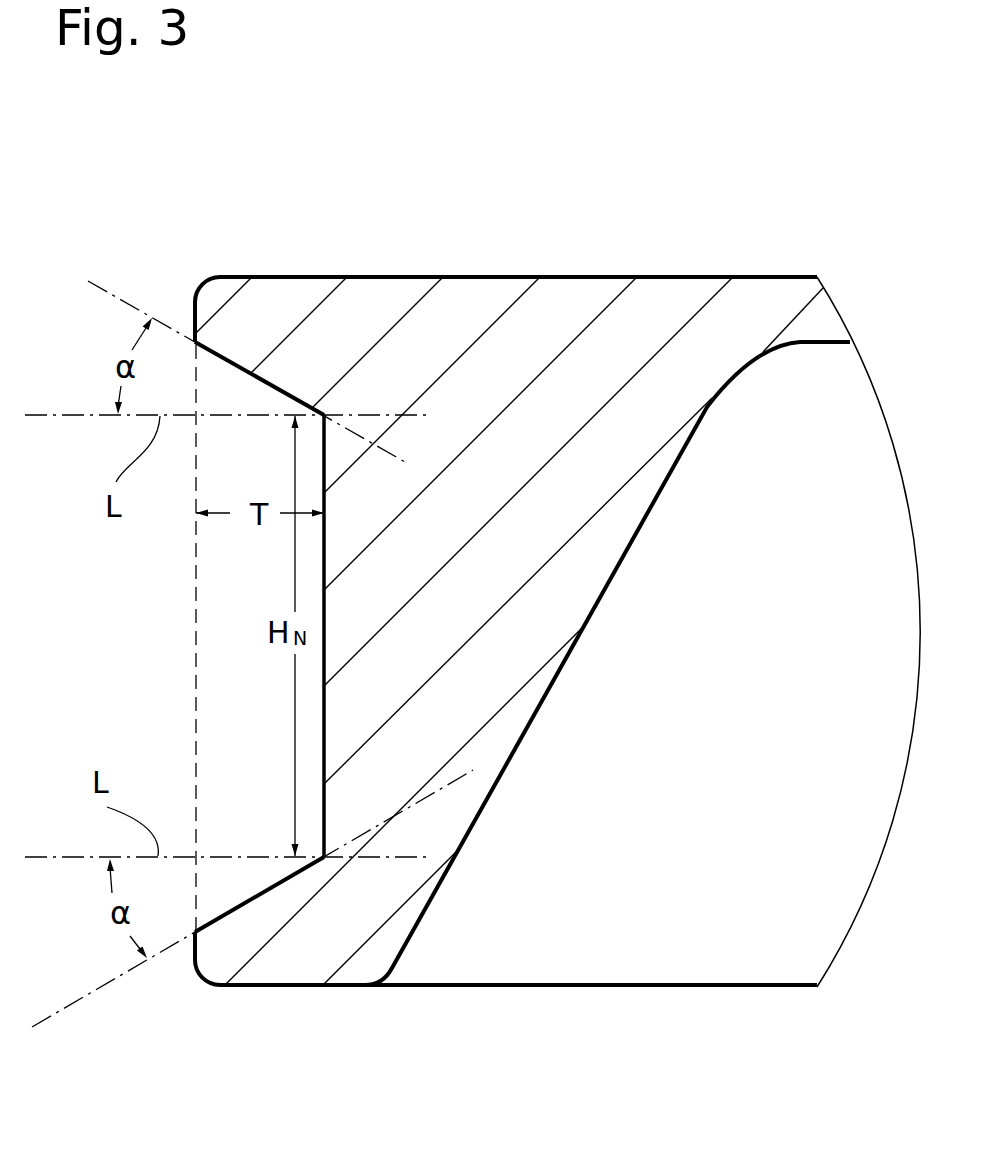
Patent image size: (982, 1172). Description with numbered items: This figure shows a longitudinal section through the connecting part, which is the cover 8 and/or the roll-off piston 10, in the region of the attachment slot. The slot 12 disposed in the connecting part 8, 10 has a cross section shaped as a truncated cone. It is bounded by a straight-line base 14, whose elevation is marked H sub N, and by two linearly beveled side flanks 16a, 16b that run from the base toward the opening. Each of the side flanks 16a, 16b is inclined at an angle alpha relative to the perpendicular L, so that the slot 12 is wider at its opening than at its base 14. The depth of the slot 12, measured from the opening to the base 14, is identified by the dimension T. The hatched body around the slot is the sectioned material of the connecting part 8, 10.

The cover 8 is at (557, 556).
The roll-off piston 10 is at (868, 632).
The slot 12 is at (242, 692).
The base 14 is at (315, 694).
The side flank 16a is at (257, 397).
The side flank 16b is at (252, 879).